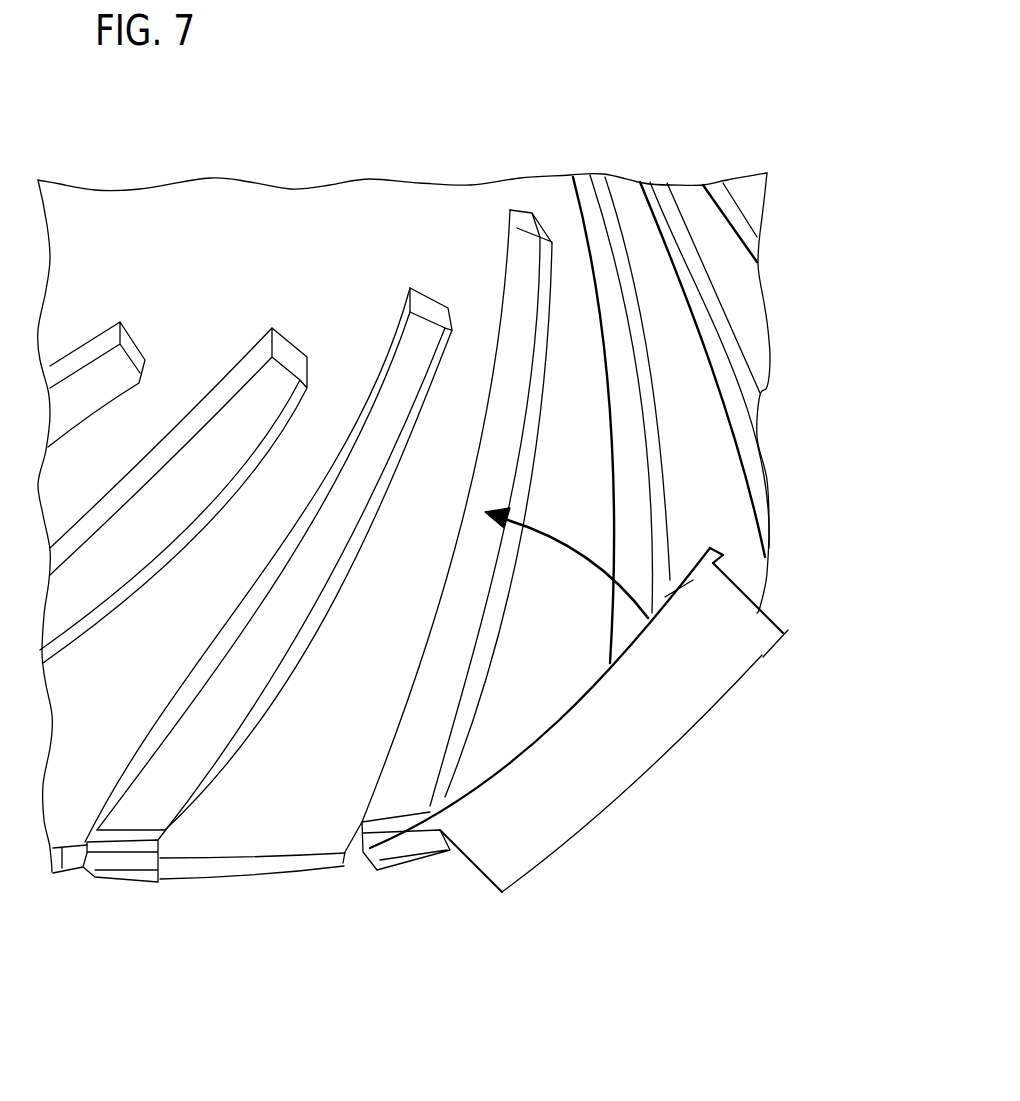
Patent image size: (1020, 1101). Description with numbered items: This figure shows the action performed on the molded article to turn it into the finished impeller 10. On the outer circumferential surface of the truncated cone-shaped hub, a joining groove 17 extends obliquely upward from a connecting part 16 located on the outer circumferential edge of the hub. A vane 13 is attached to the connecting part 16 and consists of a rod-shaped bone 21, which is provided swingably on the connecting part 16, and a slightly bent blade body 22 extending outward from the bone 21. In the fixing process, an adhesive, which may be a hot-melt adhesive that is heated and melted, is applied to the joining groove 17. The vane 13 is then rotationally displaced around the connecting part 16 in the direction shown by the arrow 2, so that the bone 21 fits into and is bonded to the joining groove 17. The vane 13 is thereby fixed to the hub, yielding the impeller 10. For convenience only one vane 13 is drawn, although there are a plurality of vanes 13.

The impeller 10 is at (635, 140).
The joining groove 17 is at (525, 260).
The connecting part 16 is at (375, 868).
The bone 21 is at (693, 580).
The blade body 22 is at (733, 682).
The vane 13 is at (694, 709).
The arrow 2 is at (573, 560).